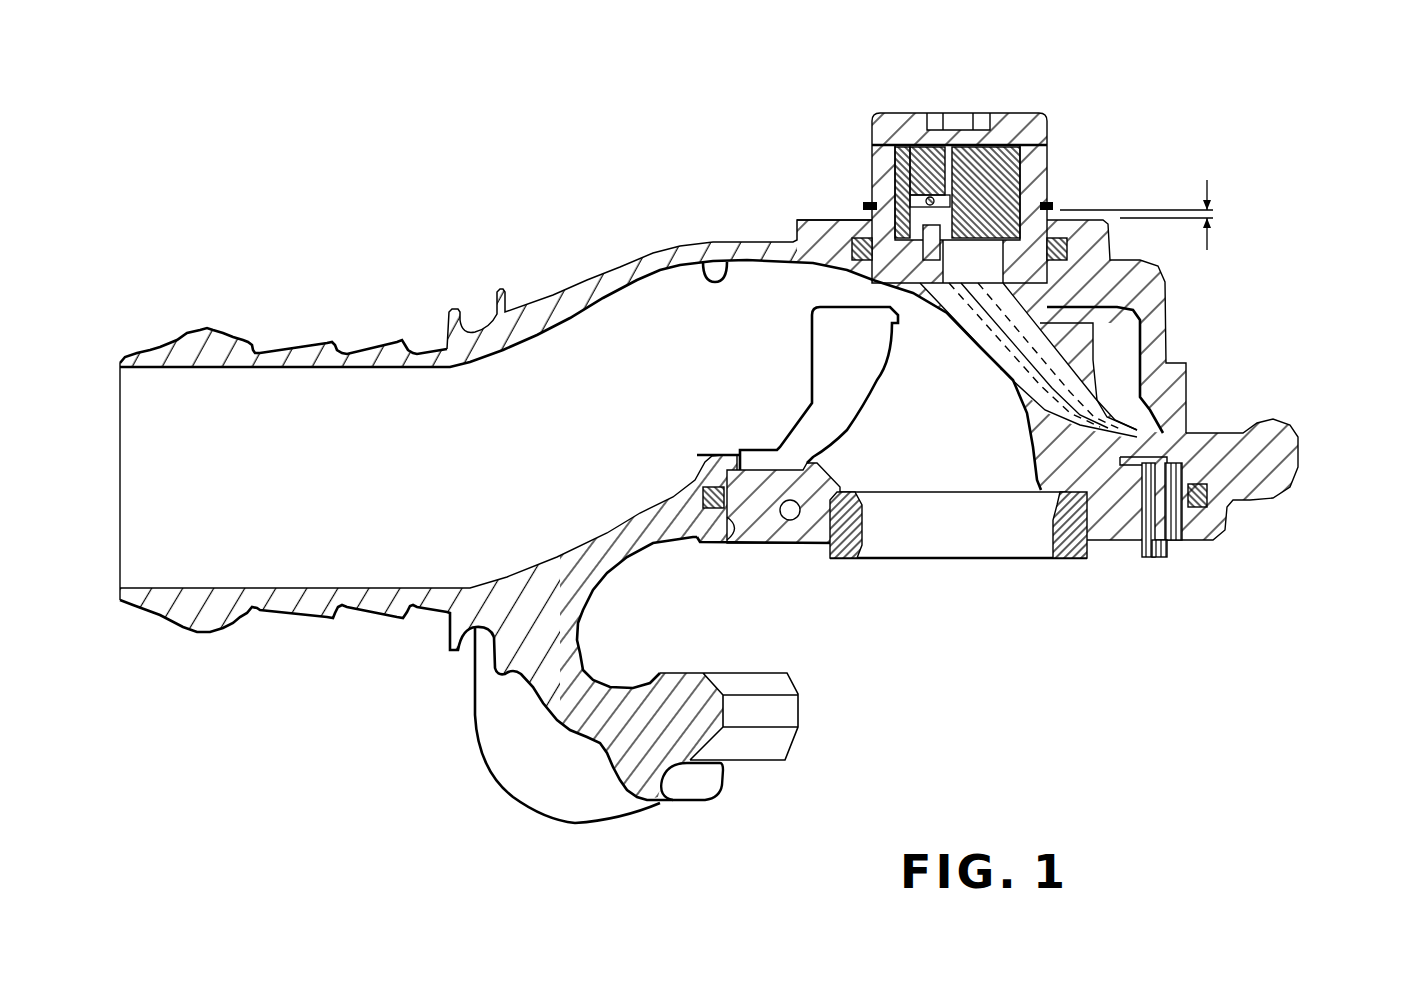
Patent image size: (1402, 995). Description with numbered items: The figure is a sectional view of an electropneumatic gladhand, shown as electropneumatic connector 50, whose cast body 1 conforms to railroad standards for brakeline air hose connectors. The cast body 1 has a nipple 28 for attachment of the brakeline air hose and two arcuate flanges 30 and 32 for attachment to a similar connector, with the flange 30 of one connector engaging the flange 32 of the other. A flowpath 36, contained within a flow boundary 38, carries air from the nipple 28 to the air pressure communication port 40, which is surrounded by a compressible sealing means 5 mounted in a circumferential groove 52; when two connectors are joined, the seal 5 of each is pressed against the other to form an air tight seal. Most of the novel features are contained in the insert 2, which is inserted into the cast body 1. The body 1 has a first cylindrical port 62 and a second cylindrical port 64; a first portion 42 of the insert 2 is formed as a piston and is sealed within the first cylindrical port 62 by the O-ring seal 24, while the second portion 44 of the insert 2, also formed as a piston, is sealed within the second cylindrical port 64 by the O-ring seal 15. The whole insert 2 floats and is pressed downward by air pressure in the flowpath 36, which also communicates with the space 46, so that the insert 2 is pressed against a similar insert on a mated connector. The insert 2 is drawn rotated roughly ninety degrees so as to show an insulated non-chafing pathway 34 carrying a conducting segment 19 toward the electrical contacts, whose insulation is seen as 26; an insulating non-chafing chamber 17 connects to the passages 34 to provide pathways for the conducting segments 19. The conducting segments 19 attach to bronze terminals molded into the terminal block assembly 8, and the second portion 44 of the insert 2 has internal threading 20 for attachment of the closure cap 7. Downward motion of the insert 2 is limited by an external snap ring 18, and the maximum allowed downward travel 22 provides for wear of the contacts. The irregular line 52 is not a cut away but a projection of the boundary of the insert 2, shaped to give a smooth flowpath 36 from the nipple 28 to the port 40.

The cast body 1 is at (632, 253).
The insert 2 is at (850, 128).
The compressible sealing means 5 is at (1067, 560).
The closure cap 7 is at (912, 135).
The terminal block assembly 8 is at (1050, 117).
The seal 15 is at (822, 220).
The chamber 17 is at (914, 284).
The external snap ring 18 is at (1053, 205).
The conducting segment 19 is at (1067, 375).
The internal threading 20 is at (1010, 120).
The maximum allowed downward travel 22 is at (1217, 215).
The seal 24 is at (703, 497).
The insulation 26 is at (1226, 436).
The nipple 28 is at (348, 333).
The arcuate flange 30 is at (800, 718).
The arcuate flange 32 is at (1298, 472).
The insulated non-chafing pathway 34 is at (1033, 380).
The flowpath 36 is at (356, 478).
The flow boundary 38 is at (713, 268).
The air pressure communication port 40 is at (957, 590).
The first portion of insert 42 is at (753, 548).
The second portion of insert 44 is at (1052, 140).
The space 46 is at (1117, 373).
The electropneumatic connector 50 is at (415, 210).
The circumferential groove 52 is at (878, 383).
The first cylindrical port 62 is at (727, 550).
The second cylindrical port 64 is at (858, 262).